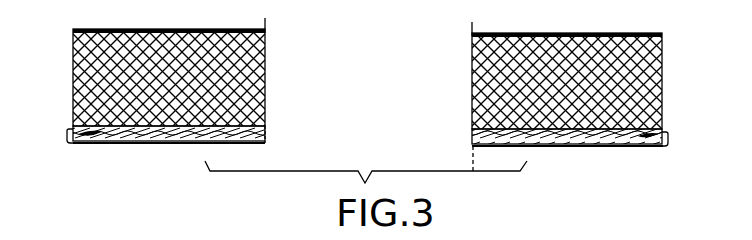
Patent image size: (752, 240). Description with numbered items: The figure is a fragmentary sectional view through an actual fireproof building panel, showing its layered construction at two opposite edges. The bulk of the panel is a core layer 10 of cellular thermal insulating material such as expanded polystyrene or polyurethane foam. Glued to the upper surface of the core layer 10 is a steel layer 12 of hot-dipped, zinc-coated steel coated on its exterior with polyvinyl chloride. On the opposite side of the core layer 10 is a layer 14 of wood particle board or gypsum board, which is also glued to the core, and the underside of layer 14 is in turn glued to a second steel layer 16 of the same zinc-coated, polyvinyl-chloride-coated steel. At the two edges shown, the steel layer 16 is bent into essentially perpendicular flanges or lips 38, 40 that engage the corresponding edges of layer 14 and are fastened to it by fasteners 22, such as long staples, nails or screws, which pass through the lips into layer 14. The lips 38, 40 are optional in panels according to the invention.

The core layer 10 is at (250, 88).
The steel layer 12 is at (265, 31).
The particle board layer 14 is at (265, 132).
The steel layer 16 is at (265, 143).
The fasteners 22 is at (89, 134).
The flange or lip 38 is at (68, 142).
The flange or lip 40 is at (664, 136).